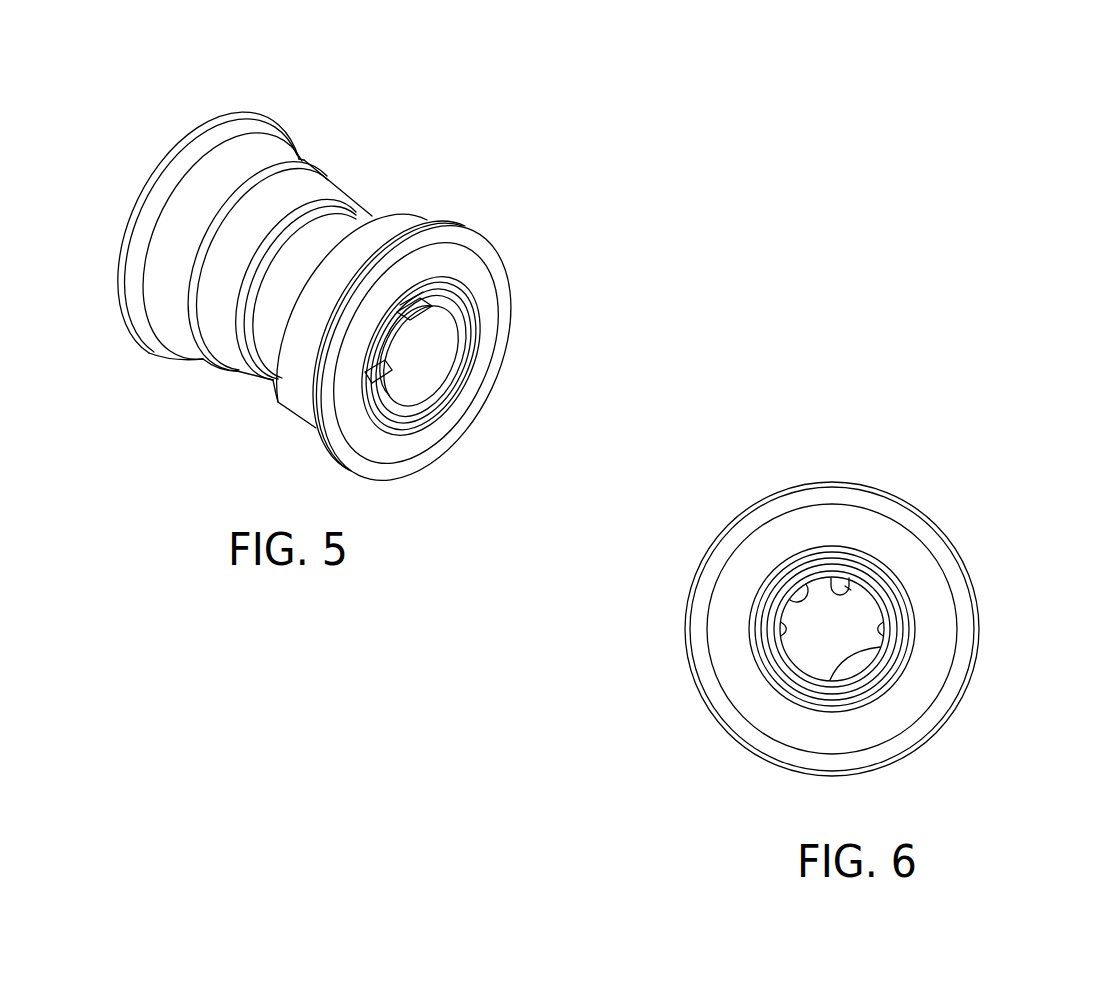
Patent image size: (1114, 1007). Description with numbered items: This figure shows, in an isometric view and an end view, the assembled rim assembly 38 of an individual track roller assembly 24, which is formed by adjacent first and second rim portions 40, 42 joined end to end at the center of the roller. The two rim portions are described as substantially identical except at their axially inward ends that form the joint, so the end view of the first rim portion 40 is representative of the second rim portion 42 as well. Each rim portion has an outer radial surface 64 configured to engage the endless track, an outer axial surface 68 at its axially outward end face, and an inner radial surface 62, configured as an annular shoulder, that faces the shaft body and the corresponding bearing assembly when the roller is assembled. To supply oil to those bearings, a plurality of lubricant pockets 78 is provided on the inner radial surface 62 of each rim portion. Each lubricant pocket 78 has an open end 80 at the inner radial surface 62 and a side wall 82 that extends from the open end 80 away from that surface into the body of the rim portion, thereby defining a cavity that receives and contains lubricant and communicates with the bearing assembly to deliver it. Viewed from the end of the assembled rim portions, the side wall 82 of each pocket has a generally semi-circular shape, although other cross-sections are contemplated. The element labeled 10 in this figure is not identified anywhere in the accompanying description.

In FIG. 6, the retaining clip 10 is at (780, 632).
In FIG. 6, the track roller assembly 24 is at (856, 458).
In FIG. 5, the rim assembly 38 is at (372, 154).
In FIG. 5, the first rim portion 40 is at (388, 227).
In FIG. 6, the first rim portion 40 is at (978, 628).
In FIG. 5, the second rim portion 42 is at (277, 150).
In FIG. 5, the inner radial surface 62 is at (402, 333).
In FIG. 6, the inner radial surface 62 is at (803, 588).
In FIG. 6, the outer radial surface 64 is at (712, 711).
In FIG. 5, the outer axial surface 68 is at (487, 329).
In FIG. 5, the lubricant pocket 78 is at (410, 316).
In FIG. 6, the lubricant pocket 78 is at (838, 580).
In FIG. 6, the open end 80 is at (850, 587).
In FIG. 6, the side wall 82 is at (828, 575).